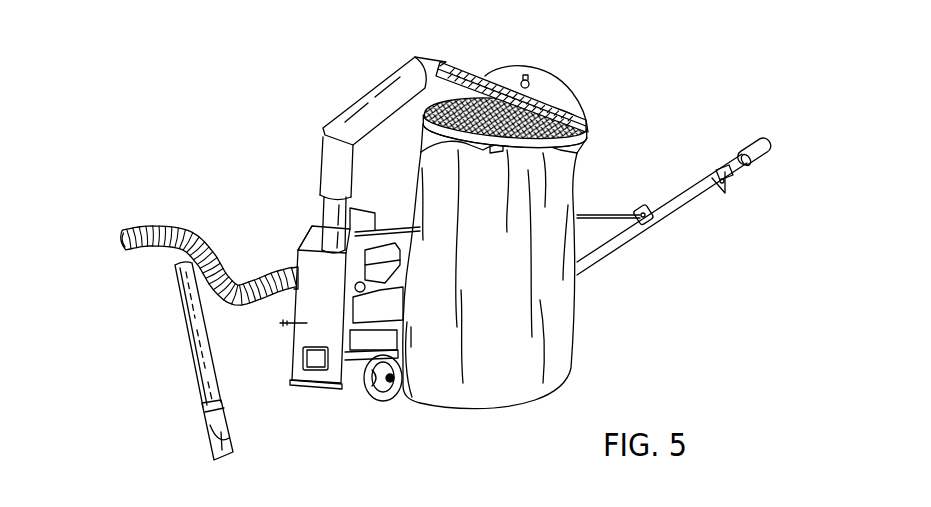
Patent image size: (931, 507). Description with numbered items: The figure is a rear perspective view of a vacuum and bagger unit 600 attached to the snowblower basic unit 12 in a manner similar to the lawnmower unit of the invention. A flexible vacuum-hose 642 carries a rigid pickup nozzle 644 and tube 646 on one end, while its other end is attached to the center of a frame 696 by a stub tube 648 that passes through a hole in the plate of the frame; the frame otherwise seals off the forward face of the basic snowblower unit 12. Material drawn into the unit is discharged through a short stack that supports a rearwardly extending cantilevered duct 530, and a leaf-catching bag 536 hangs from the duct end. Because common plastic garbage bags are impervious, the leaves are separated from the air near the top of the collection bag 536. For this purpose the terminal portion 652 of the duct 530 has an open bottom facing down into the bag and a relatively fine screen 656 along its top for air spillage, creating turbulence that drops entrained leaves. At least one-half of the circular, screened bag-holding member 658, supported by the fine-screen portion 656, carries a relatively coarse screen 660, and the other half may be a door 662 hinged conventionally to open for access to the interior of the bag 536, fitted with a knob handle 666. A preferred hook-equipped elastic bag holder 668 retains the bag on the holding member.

The snowblower basic unit 12 is at (330, 398).
The cantilevered duct 530 is at (323, 130).
The leaf-catching bag 536 is at (567, 378).
The vacuum and bagger unit 600 is at (176, 319).
The flexible vacuum-hose 642 is at (150, 255).
The rigid pickup nozzle 644 is at (210, 418).
The tube 646 is at (190, 335).
The stub tube 648 is at (292, 268).
The terminal portion of the duct 652 is at (424, 62).
The relatively fine screen 656 is at (462, 70).
The circular screened bag-holding member 658 is at (585, 124).
The relatively coarse screen 660 is at (580, 157).
The door 662 is at (556, 94).
The knob handle 666 is at (522, 80).
The hook-equipped elastic bag holder 668 is at (455, 147).
The frame 696 is at (305, 233).